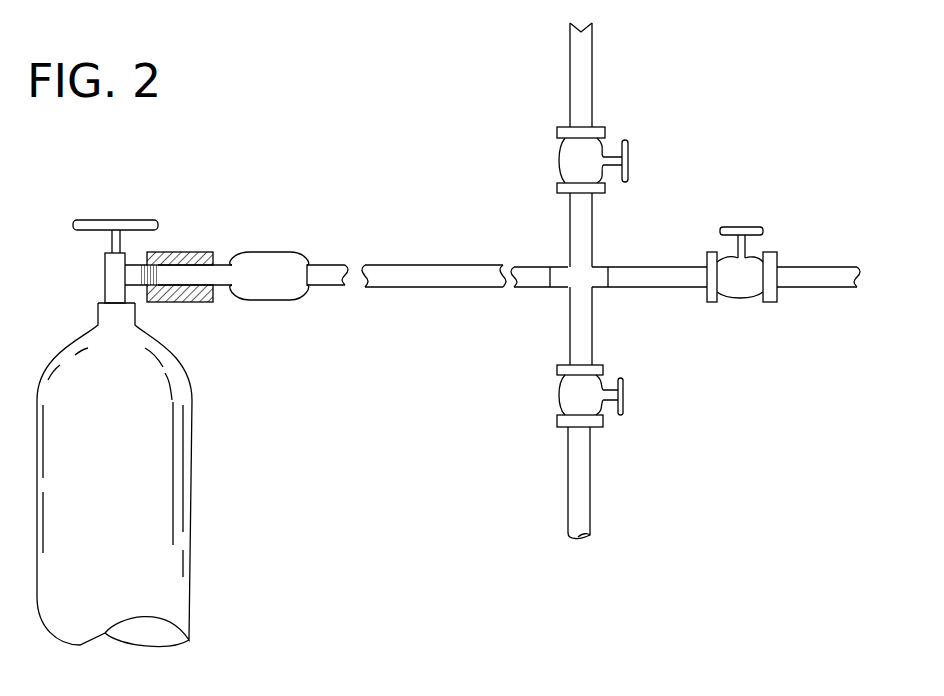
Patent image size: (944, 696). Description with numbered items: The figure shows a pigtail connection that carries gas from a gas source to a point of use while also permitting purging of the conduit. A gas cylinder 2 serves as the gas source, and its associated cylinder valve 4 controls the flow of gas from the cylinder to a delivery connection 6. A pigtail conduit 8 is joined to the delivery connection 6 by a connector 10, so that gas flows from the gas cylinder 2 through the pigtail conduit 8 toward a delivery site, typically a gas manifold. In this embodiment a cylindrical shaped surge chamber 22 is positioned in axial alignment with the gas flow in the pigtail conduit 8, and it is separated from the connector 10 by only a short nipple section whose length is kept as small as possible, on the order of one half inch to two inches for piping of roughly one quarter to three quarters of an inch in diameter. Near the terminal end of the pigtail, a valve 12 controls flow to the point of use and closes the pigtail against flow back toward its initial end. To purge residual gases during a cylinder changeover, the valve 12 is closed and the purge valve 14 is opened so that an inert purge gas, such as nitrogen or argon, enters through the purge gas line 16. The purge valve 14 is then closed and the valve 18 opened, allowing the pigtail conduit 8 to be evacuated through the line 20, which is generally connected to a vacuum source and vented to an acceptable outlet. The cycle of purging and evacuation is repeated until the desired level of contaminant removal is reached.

The gas cylinder 2 is at (192, 455).
The cylinder valve 4 is at (105, 280).
The delivery connection 6 is at (136, 264).
The connector 10 is at (200, 252).
The surge chamber 22 is at (268, 252).
The pigtail conduit 8 is at (392, 265).
The purge gas line 16 is at (592, 72).
The purge valve 14 is at (628, 160).
The valve 12 is at (735, 227).
The valve 18 is at (624, 400).
The line 20 is at (590, 490).